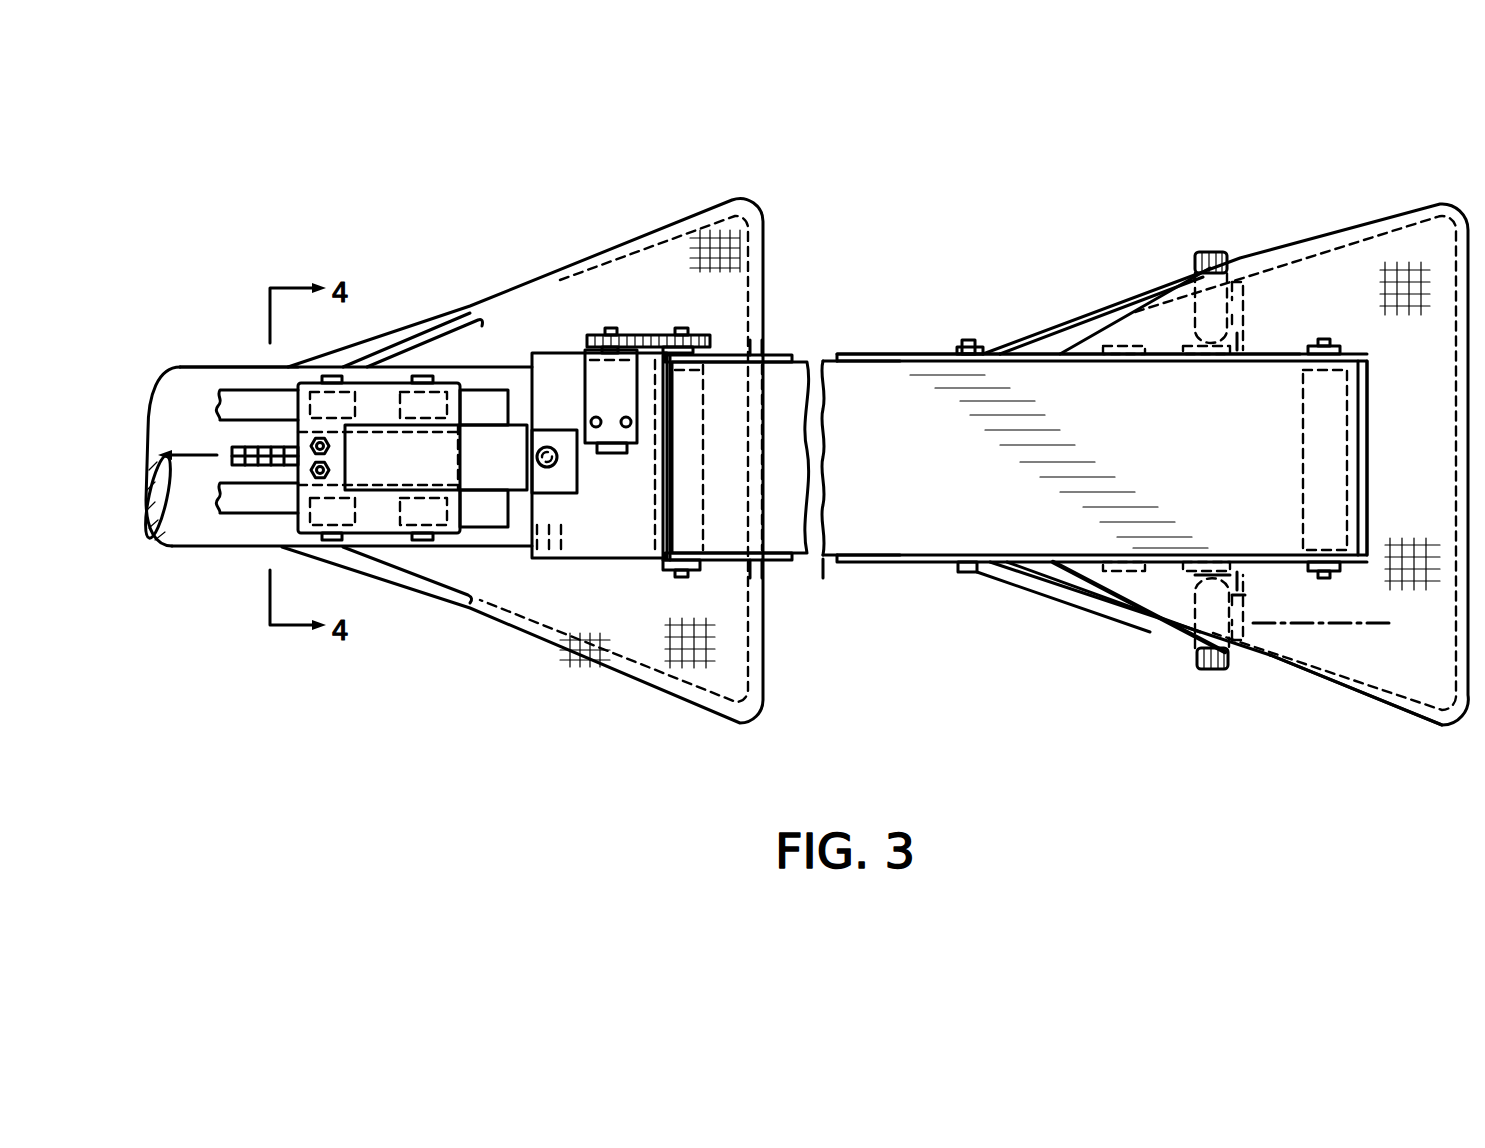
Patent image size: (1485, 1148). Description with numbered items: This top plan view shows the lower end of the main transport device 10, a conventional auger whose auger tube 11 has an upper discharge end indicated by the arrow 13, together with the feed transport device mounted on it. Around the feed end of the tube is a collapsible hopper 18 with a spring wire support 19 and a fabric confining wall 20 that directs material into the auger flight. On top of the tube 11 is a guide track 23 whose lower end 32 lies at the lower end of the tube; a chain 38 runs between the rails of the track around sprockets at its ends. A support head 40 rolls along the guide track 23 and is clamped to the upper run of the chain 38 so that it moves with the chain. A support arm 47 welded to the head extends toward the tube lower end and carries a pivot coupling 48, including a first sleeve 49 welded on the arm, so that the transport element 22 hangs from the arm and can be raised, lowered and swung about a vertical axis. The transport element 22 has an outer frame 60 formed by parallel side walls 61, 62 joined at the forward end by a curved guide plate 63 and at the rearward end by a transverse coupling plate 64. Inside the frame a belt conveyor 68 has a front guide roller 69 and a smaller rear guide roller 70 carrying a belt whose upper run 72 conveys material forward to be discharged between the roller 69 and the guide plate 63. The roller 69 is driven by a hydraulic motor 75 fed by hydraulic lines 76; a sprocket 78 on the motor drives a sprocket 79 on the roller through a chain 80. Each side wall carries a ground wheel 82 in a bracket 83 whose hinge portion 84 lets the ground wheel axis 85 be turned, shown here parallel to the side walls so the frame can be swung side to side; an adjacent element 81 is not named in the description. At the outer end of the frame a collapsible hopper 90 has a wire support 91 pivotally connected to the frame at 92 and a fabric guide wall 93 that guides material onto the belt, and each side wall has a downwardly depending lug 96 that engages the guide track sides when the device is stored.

The main transport device 10 is at (211, 552).
The auger tube 11 is at (190, 378).
The upper discharge end 13 is at (203, 452).
The collapsible hopper 18 is at (589, 662).
The spring wire support 19 is at (463, 580).
The fabric confining wall 20 is at (684, 662).
The transport element 22 is at (855, 334).
The guide track 23 is at (258, 384).
The lower end of the track 32 is at (515, 392).
The chain 38 is at (287, 472).
The support head 40 is at (490, 470).
The support arm 47 is at (525, 503).
The pivot coupling 48 is at (583, 486).
The first sleeve 49 is at (577, 448).
The outer frame 60 is at (919, 343).
The side wall 61 is at (892, 364).
The side wall 62 is at (867, 569).
The curved guide plate 63 is at (613, 537).
The transverse coupling plate 64 is at (1367, 437).
The belt conveyor 68 is at (823, 562).
The front guide roller 69 is at (698, 427).
The rear guide roller 70 is at (1308, 423).
The upper run 72 is at (1247, 387).
The hydraulic motor 75 is at (587, 373).
The hydraulic lines 76 is at (596, 418).
The sprocket 78 is at (605, 334).
The sprocket 79 is at (695, 335).
The chain 80 is at (652, 335).
The clip 81 is at (1255, 318).
The ground wheel 82 is at (1201, 248).
The bracket 83 is at (1246, 595).
The hinge portion 84 is at (1217, 566).
The ground wheel axis 85 is at (1299, 630).
The collapsible hopper 90 is at (1350, 212).
The wire support 91 is at (1055, 323).
The pivotal connection 92 is at (975, 578).
The fabric guide wall 93 is at (1430, 683).
The lug 96 is at (1126, 338).